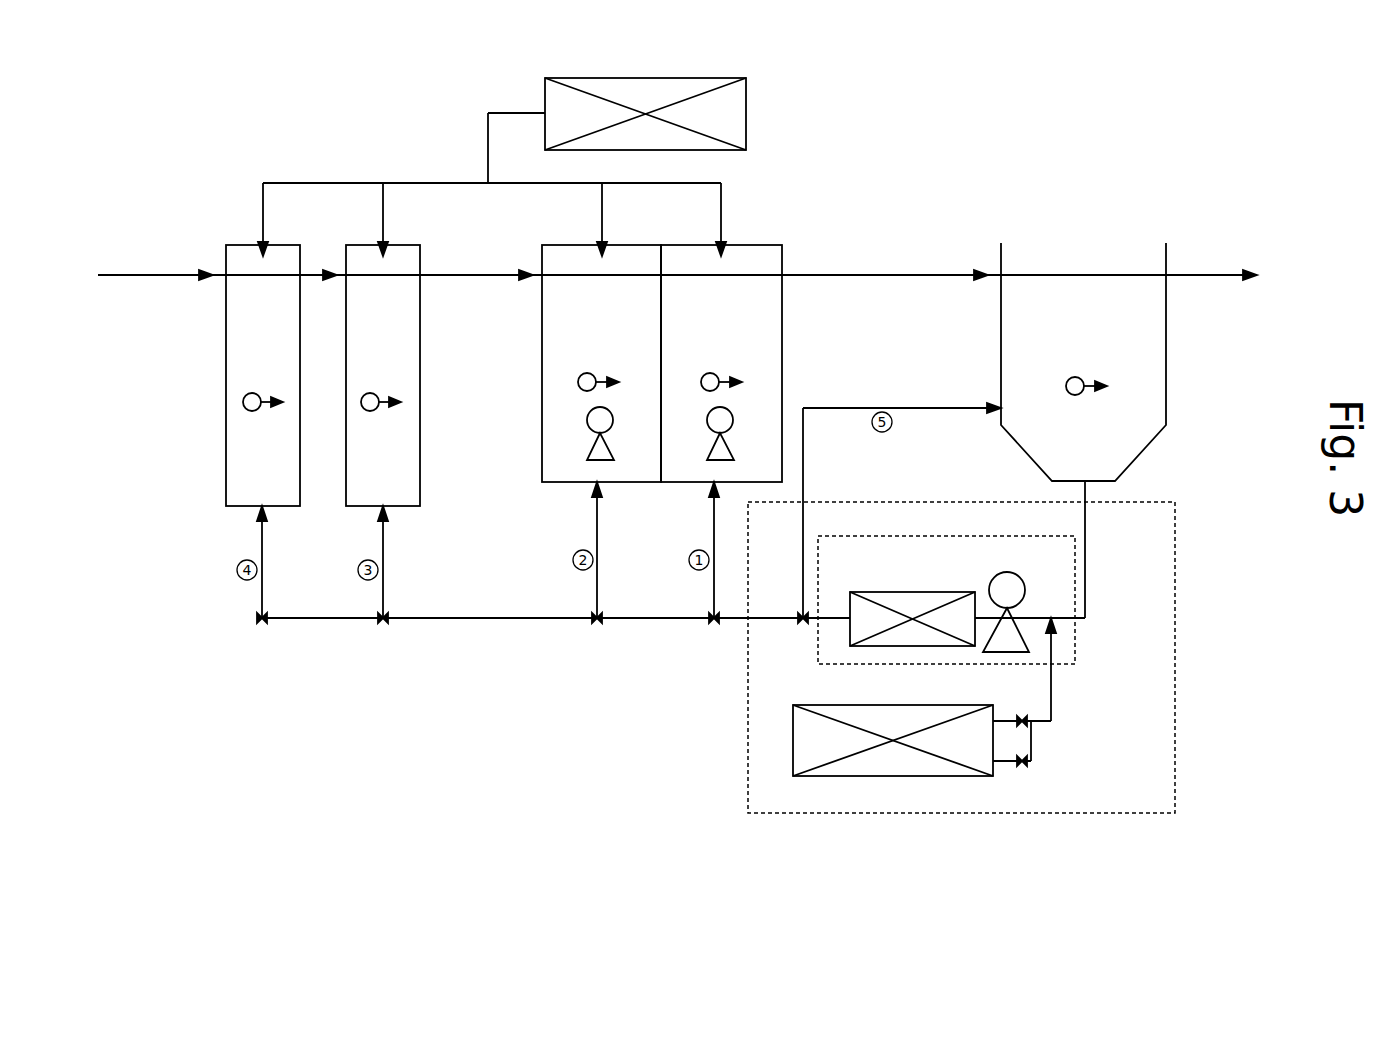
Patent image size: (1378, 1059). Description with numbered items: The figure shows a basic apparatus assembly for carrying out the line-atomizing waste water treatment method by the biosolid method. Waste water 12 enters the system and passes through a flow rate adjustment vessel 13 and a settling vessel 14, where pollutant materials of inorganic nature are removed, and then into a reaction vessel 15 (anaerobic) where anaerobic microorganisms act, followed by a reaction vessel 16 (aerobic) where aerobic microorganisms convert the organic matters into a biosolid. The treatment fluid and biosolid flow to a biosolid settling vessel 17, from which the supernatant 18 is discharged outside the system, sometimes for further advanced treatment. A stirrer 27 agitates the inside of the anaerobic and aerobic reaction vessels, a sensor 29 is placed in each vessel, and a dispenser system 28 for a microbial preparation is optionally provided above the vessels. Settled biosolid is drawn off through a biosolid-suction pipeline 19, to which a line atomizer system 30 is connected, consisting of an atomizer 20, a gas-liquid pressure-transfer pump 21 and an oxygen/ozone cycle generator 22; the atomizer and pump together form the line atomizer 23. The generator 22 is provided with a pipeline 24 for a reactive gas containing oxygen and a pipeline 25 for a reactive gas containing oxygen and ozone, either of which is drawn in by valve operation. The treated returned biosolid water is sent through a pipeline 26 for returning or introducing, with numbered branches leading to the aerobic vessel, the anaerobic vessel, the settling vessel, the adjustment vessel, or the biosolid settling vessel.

The waste water 12 is at (152, 273).
The adjustment vessel 13 is at (262, 343).
The settling vessel 14 is at (400, 318).
The reaction vessel (anaerobic) 15 is at (567, 318).
The reaction vessel (aerobic) 16 is at (742, 323).
The biosolid settling vessel 17 is at (1143, 327).
The supernatant 18 is at (1180, 275).
The biosolid-suction pipeline 19 is at (1088, 527).
The atomizer 20 is at (888, 590).
The gas-liquid pressure-transfer pump 21 is at (1012, 572).
The oxygen/ozone cycle generator 22 is at (873, 705).
The line atomizer 23 is at (862, 535).
The pipeline for reactive gas containing oxygen 24 is at (1005, 720).
The pipeline for reactive gas containing oxygen and ozone 25 is at (1002, 762).
The pipeline for returning/introducing 26 is at (833, 620).
The stirrer 27 is at (591, 441).
The dispenser system for microbial preparation 28 is at (637, 77).
The sensor 29 is at (243, 407).
The line atomizer system 30 is at (888, 815).